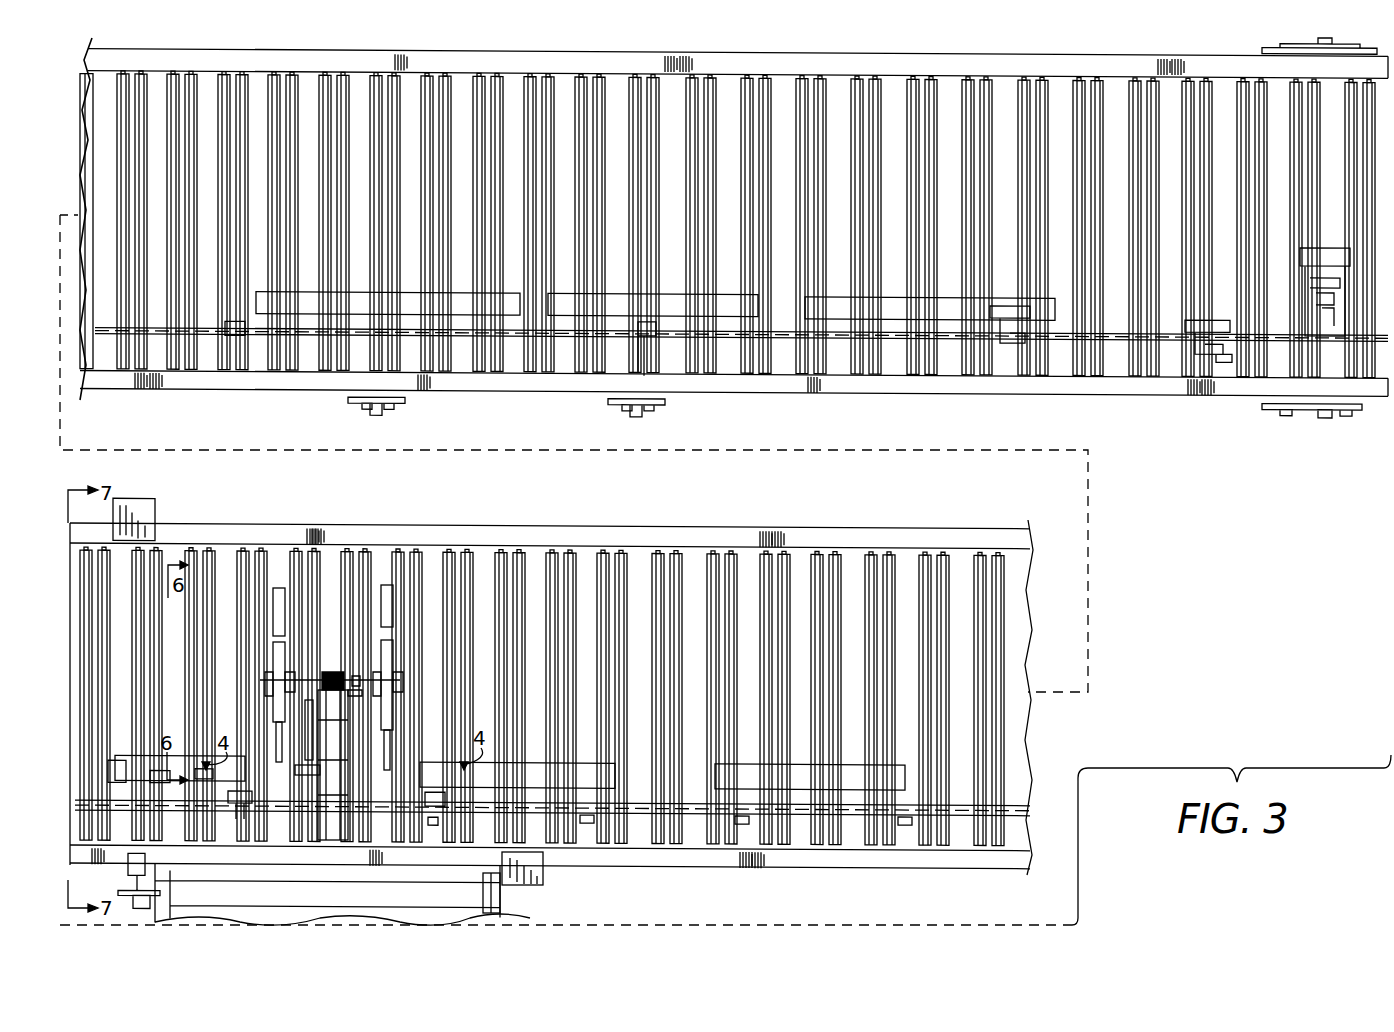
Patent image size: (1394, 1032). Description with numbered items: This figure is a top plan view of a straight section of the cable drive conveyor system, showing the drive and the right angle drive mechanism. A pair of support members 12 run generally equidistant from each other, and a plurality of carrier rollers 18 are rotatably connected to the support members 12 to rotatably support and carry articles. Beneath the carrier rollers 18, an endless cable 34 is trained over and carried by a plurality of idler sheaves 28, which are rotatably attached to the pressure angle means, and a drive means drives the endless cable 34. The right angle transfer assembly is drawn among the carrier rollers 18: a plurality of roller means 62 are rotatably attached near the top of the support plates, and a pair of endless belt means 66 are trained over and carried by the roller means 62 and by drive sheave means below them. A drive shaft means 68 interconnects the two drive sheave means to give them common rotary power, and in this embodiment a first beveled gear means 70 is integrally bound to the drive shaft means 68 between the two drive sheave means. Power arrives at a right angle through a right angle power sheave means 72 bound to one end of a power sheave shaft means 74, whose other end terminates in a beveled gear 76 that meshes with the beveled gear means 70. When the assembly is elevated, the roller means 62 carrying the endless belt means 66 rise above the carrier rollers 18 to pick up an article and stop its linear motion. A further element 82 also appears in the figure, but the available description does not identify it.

The support members 12 is at (802, 393).
The carrier rollers 18 is at (288, 362).
The idler sheaves 28 is at (1016, 336).
The endless cable 34 is at (212, 333).
The roller means 62 is at (275, 598).
The endless belt means 66 is at (278, 632).
The drive shaft means 68 is at (338, 688).
The first beveled gear means 70 is at (335, 683).
The right angle power sheave means 72 is at (332, 783).
The power sheave shaft means 74 is at (320, 795).
The beveled gear 76 is at (350, 690).
The actuator 82 is at (478, 903).